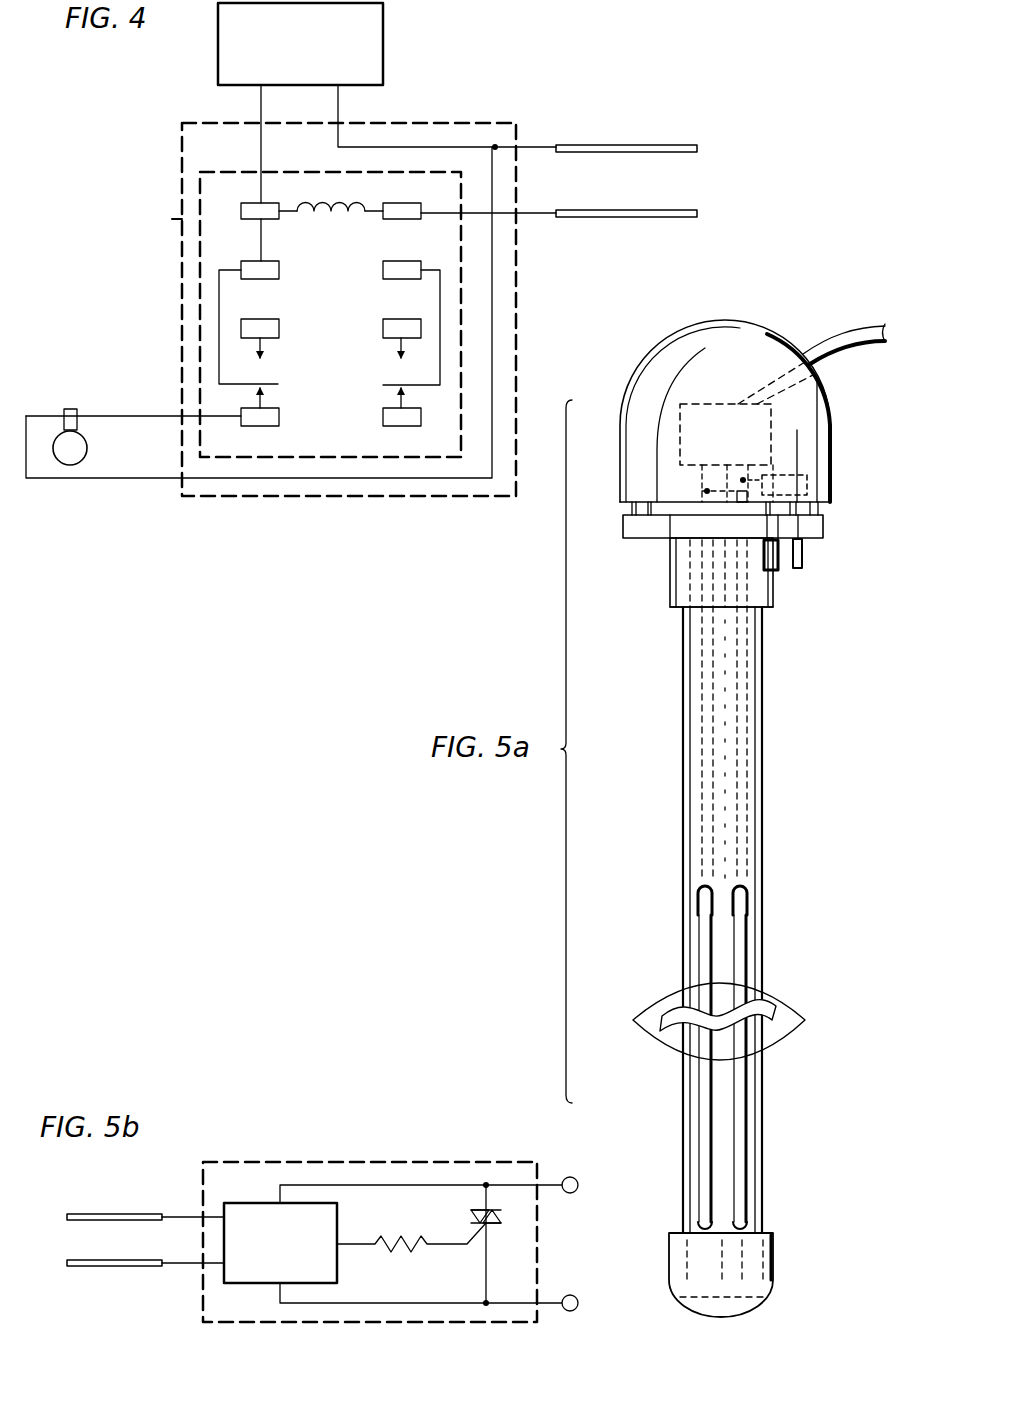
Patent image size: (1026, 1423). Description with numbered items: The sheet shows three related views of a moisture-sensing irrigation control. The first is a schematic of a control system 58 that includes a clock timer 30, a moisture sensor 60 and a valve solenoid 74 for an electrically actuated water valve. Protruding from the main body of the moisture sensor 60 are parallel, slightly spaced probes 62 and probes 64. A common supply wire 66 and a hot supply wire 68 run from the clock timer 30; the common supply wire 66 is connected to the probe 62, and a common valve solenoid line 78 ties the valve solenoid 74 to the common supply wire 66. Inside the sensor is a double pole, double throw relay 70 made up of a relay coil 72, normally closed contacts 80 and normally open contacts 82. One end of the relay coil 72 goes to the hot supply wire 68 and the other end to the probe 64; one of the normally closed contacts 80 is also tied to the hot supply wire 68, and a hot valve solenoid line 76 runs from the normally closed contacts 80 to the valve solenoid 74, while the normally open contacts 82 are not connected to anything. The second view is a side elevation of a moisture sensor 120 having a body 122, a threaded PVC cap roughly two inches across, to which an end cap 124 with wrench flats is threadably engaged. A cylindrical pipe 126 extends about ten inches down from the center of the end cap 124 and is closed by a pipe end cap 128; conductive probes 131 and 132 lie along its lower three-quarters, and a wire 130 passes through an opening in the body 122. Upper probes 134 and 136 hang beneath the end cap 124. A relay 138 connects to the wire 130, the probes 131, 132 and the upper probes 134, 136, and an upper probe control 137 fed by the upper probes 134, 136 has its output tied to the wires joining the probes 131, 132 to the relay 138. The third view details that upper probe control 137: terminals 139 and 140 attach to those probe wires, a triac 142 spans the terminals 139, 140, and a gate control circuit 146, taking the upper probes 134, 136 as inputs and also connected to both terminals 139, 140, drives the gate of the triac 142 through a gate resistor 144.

In FIG. 4, the clock timer 30 is at (383, 62).
In FIG. 4, the control system 58 is at (176, 282).
In FIG. 4, the moisture sensor 60 is at (172, 220).
In FIG. 4, the probes 62 is at (678, 145).
In FIG. 4, the probes 64 is at (678, 219).
In FIG. 4, the common supply wire 66 is at (338, 101).
In FIG. 4, the hot supply wire 68 is at (261, 101).
In FIG. 4, the double pole, double throw relay 70 is at (241, 170).
In FIG. 4, the relay coil 72 is at (330, 214).
In FIG. 4, the valve solenoid 74 is at (88, 452).
In FIG. 4, the hot valve solenoid line 76 is at (104, 414).
In FIG. 4, the common valve solenoid line 78 is at (33, 481).
In FIG. 4, the normally closed contacts 80 is at (385, 425).
In FIG. 4, the normally open contacts 82 is at (385, 335).
In FIG. 5a, the moisture sensor 120 is at (712, 323).
In FIG. 5a, the body 122 is at (833, 453).
In FIG. 5a, the end cap 124 is at (628, 532).
In FIG. 5a, the cylindrical pipe 126 is at (685, 630).
In FIG. 5a, the pipe end cap 128 is at (765, 1253).
In FIG. 5a, the wire 130 is at (861, 336).
In FIG. 5a, the probe 131 is at (652, 1057).
In FIG. 5a, the probe 132 is at (790, 1057).
In FIG. 5a, the upper probe 134 is at (780, 578).
In FIG. 5b, the upper probe 134 is at (85, 1214).
In FIG. 5a, the upper probe 136 is at (804, 564).
In FIG. 5b, the upper probe 136 is at (85, 1268).
In FIG. 5a, the upper probe control 137 is at (792, 490).
In FIG. 5b, the upper probe control 137 is at (397, 1162).
In FIG. 5a, the relay 138 is at (720, 403).
In FIG. 5b, the terminal 139 is at (578, 1193).
In FIG. 5b, the terminal 140 is at (578, 1297).
In FIG. 5b, the triac 142 is at (468, 1212).
In FIG. 5b, the gate resistor 144 is at (410, 1250).
In FIG. 5b, the gate control circuit 146 is at (258, 1204).